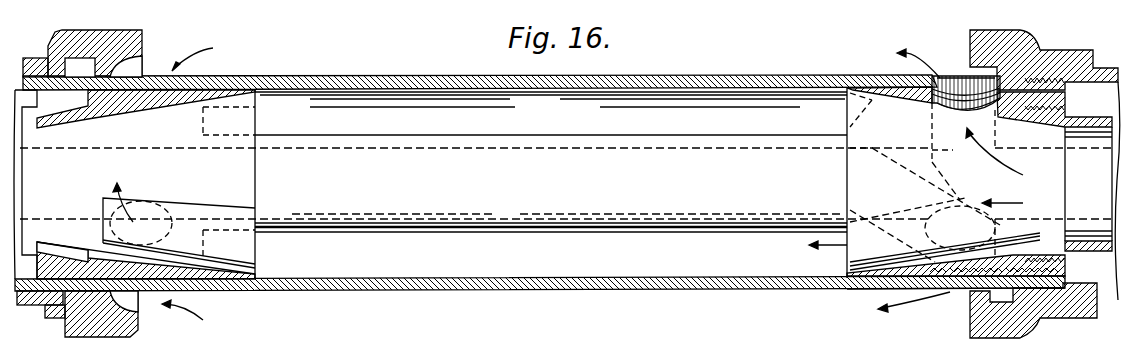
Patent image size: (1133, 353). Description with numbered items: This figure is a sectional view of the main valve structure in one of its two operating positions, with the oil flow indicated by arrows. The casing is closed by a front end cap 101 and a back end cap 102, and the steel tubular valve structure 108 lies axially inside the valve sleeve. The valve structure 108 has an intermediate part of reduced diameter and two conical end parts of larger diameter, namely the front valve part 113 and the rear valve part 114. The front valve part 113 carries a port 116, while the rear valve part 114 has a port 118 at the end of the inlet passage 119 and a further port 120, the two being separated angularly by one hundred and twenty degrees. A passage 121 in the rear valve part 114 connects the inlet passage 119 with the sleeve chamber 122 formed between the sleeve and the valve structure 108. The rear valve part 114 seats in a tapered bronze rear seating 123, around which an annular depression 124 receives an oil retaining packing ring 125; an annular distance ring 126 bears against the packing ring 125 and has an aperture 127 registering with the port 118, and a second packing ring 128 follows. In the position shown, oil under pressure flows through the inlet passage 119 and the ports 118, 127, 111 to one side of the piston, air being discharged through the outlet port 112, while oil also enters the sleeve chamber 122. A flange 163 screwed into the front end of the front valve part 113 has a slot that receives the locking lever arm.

The front end cap 101 is at (150, 39).
The back end cap 102 is at (1078, 55).
The tubular valve structure 108 is at (551, 140).
The port 111 is at (953, 82).
The port 112 is at (155, 220).
The front valve part 113 is at (259, 178).
The rear valve part 114 is at (843, 190).
The port 116 is at (218, 206).
The port 118 is at (968, 104).
The inlet passage 119 is at (932, 148).
The port 120 is at (1018, 213).
The passage 121 is at (912, 220).
The sleeve chamber 122 is at (551, 240).
The rear seating 123 is at (902, 92).
The annular depression 124 is at (912, 77).
The oil retaining packing ring 125 is at (910, 290).
The annular distance ring 126 is at (950, 292).
The aperture 127 is at (980, 110).
The packing ring 128 is at (1010, 302).
The flange 163 is at (37, 178).